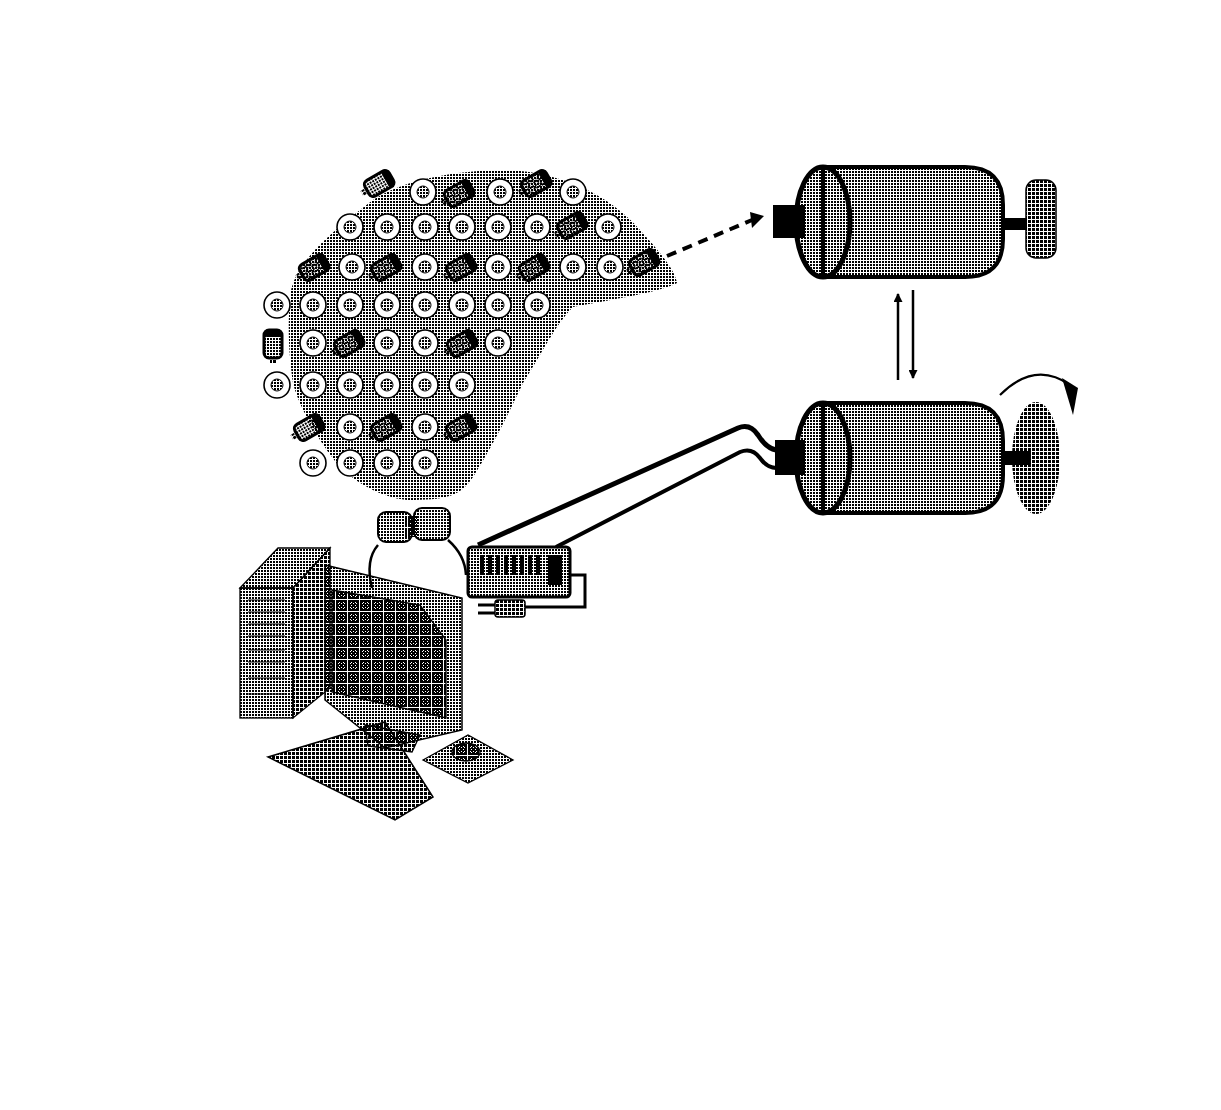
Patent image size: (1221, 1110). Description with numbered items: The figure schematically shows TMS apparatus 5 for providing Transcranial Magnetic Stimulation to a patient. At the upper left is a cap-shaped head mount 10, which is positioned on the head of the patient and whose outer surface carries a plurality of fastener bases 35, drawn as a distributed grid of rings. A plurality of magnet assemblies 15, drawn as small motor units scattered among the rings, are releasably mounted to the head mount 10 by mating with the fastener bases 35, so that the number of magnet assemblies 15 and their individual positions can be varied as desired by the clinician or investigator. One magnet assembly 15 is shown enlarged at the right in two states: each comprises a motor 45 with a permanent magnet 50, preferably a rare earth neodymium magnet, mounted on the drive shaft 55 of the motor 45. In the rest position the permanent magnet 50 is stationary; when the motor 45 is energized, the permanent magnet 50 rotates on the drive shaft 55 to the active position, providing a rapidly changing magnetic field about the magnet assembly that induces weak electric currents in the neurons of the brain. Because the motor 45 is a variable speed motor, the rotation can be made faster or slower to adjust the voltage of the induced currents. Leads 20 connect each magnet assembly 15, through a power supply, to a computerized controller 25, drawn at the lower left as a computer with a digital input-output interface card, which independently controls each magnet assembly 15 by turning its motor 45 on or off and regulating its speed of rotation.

The TMS apparatus 5 is at (182, 78).
The head mount 10 is at (302, 240).
The magnet assembly 15 is at (244, 352).
The lead 20 is at (640, 462).
The computerized controller 25 is at (216, 538).
The fastener base 35 is at (614, 213).
The motor 45 is at (800, 268).
The permanent magnet 50 is at (1064, 191).
The drive shaft 55 is at (1012, 238).